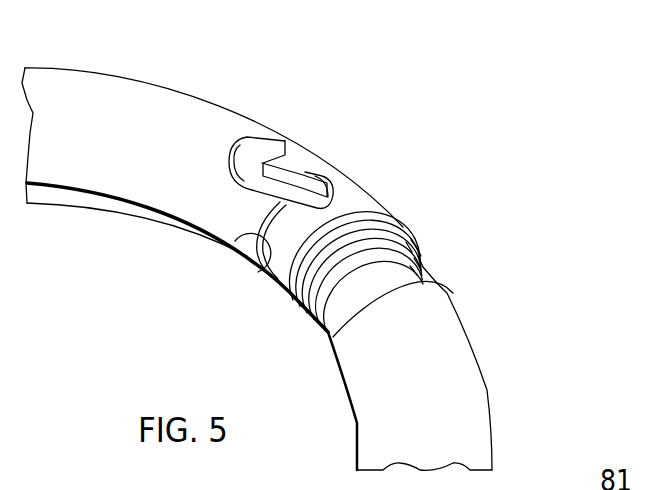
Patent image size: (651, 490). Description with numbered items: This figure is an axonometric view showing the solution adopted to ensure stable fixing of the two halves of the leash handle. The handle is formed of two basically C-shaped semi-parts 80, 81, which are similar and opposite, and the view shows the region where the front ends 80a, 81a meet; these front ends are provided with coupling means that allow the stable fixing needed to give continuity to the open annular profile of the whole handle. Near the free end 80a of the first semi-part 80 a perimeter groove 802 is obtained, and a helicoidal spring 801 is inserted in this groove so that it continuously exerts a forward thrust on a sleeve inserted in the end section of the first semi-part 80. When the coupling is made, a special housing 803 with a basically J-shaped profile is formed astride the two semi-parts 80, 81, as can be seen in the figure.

The semi-part 81 is at (87, 98).
The front end 81a is at (235, 235).
The housing 803 is at (278, 185).
The free end 80a is at (267, 283).
The helicoidal spring 801 is at (400, 225).
The perimeter groove 802 is at (393, 270).
The semi-part 80 is at (450, 356).